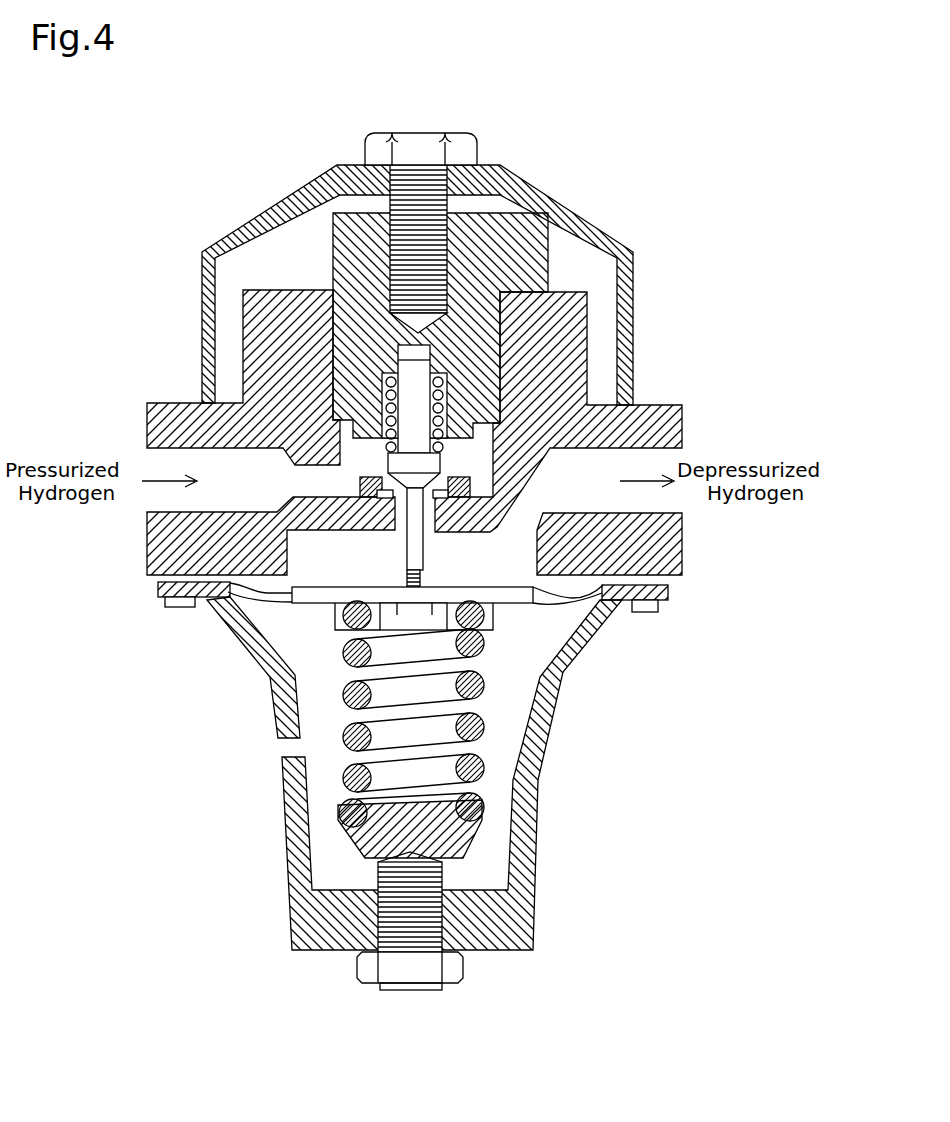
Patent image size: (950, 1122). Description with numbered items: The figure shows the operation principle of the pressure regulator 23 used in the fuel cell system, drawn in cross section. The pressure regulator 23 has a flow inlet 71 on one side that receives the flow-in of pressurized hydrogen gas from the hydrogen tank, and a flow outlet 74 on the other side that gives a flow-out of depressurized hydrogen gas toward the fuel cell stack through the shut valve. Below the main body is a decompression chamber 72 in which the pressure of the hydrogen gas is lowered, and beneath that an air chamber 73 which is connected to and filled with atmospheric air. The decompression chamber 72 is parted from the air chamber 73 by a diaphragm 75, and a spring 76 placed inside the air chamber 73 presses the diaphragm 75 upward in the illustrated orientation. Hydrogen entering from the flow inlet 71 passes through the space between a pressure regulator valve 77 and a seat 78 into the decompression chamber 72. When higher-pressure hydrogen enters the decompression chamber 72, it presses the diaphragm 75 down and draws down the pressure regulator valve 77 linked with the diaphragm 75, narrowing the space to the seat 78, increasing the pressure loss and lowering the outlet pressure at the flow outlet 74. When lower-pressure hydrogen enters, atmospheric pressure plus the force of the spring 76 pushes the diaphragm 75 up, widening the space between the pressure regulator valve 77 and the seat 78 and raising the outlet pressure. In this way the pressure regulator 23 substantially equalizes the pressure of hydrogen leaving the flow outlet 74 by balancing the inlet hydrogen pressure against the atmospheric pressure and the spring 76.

The pressure regulator 23 is at (614, 150).
The flow inlet 71 is at (146, 508).
The decompression chamber 72 is at (487, 563).
The air chamber 73 is at (541, 651).
The flow outlet 74 is at (691, 512).
The diaphragm 75 is at (267, 600).
The spring 76 is at (487, 680).
The pressure regulator valve 77 is at (447, 437).
The seat 78 is at (390, 490).